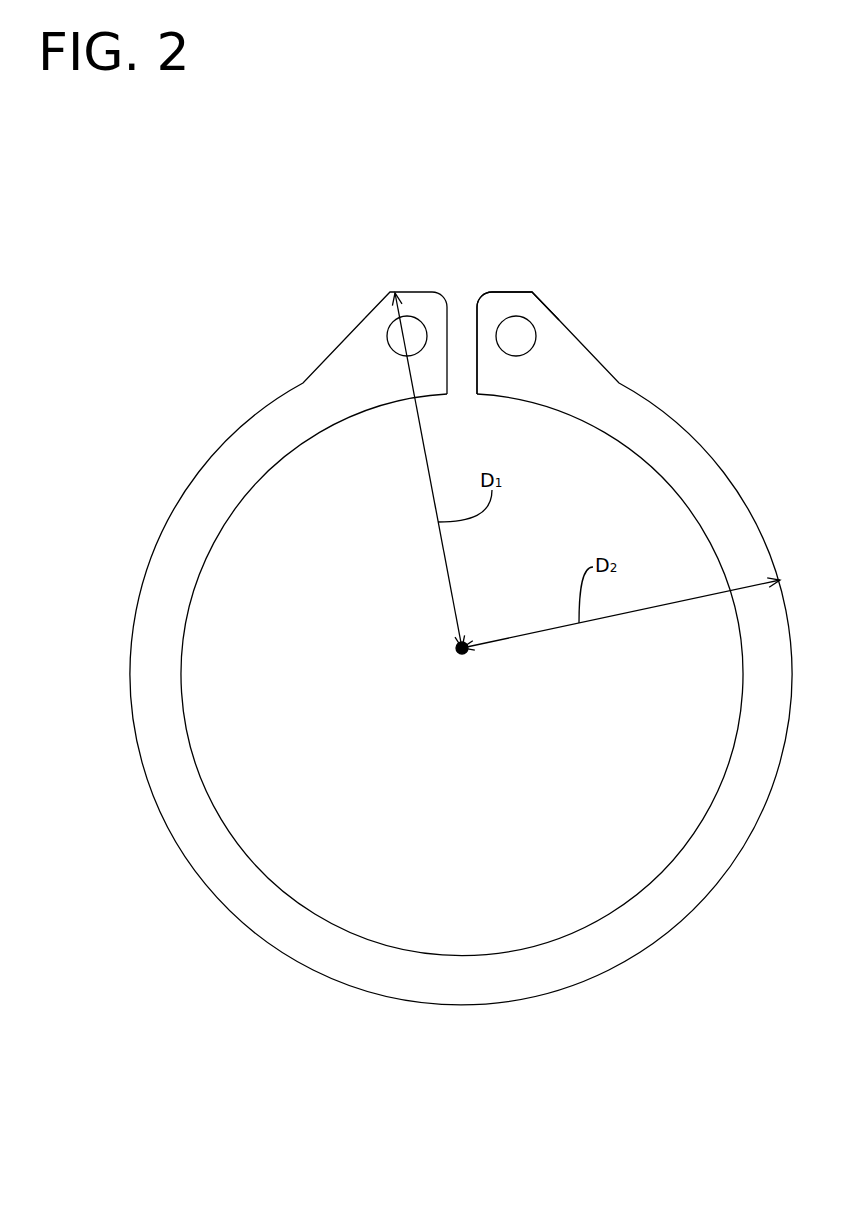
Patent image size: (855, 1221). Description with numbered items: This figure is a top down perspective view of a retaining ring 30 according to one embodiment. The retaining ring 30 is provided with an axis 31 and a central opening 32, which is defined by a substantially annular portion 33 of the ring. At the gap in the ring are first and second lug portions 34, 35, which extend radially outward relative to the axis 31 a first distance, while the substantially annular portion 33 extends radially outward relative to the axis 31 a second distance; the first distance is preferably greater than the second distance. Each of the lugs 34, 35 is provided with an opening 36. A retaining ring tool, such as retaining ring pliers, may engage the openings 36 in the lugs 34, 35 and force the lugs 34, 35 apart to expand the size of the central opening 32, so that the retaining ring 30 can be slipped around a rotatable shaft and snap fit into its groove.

The retaining ring 30 is at (457, 612).
The axis 31 is at (455, 653).
The central opening 32 is at (295, 588).
The substantially annular portion 33 is at (178, 538).
The first lug portion 34 is at (380, 323).
The second lug portion 35 is at (545, 323).
The openings 36 is at (412, 336).